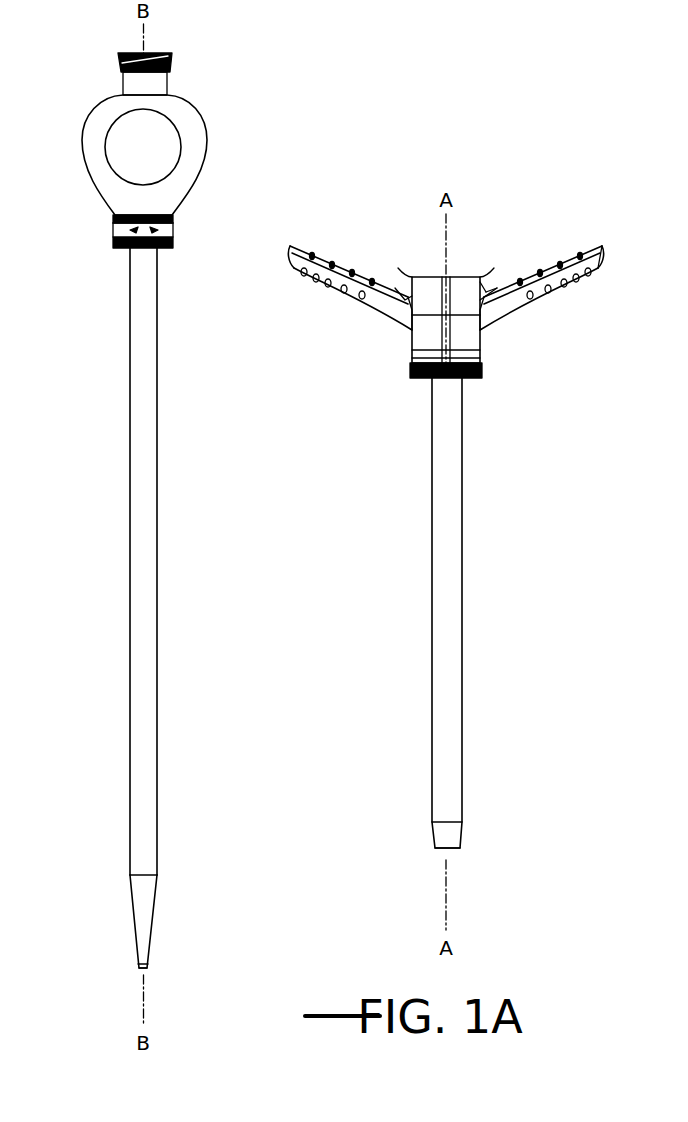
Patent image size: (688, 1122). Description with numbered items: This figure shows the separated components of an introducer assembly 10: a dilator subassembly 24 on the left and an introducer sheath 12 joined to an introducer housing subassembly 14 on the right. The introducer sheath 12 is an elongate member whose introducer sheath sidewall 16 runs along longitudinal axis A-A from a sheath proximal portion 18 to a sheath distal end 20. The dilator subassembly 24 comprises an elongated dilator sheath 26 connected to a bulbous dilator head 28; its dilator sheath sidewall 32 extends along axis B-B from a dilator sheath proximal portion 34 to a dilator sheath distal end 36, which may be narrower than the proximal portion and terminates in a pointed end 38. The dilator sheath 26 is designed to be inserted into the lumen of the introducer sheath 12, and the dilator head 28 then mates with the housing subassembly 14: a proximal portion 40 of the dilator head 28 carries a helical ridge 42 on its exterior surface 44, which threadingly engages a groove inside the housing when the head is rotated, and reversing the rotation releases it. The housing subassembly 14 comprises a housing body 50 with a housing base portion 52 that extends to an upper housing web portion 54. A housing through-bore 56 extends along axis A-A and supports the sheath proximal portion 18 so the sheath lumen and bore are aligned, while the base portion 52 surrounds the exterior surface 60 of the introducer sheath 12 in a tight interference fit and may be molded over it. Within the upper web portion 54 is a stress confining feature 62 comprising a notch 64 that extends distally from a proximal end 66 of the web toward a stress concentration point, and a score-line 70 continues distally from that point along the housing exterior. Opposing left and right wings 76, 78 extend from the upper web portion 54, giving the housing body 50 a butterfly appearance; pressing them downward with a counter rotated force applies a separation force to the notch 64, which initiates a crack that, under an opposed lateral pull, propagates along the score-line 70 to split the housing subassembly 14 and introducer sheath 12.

The introducer assembly 10 is at (497, 210).
The introducer sheath 12 is at (463, 630).
The introducer housing subassembly 14 is at (519, 327).
The introducer sheath sidewall 16 is at (458, 850).
The sheath proximal portion 18 is at (452, 393).
The sheath distal end 20 is at (437, 850).
The dilator subassembly 24 is at (108, 469).
The dilator sheath 26 is at (152, 442).
The dilator head 28 is at (186, 122).
The dilator sheath sidewall 32 is at (150, 968).
The dilator sheath proximal portion 34 is at (150, 313).
The dilator sheath distal end 36 is at (138, 966).
The pointed end 38 is at (141, 970).
The proximal portion of dilator head 40 is at (178, 234).
The helical ridge 42 is at (172, 224).
The exterior surface of dilator head 44 is at (122, 243).
The housing body 50 is at (425, 340).
The housing base portion 52 is at (479, 367).
The upper housing web portion 54 is at (497, 276).
The housing through-bore 56 is at (433, 273).
The exterior surface of introducer sheath 60 is at (448, 474).
The stress confining feature 62 is at (487, 278).
The notch 64 is at (467, 275).
The proximal end of upper web portion 66 is at (405, 272).
The score-line 70 is at (418, 372).
The left wing 76 is at (312, 276).
The right wing 78 is at (607, 250).